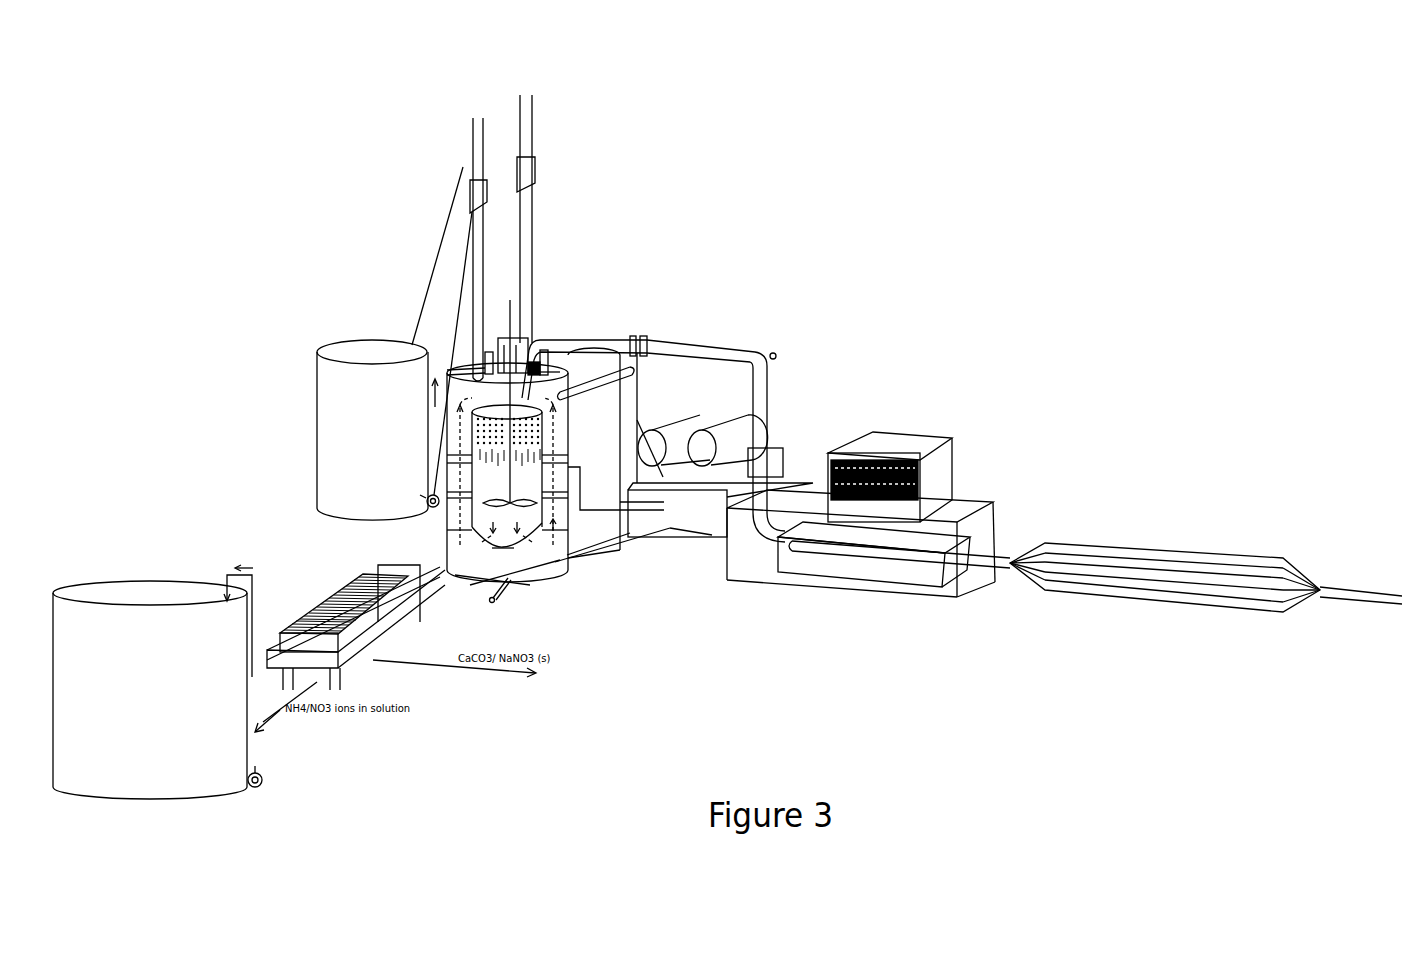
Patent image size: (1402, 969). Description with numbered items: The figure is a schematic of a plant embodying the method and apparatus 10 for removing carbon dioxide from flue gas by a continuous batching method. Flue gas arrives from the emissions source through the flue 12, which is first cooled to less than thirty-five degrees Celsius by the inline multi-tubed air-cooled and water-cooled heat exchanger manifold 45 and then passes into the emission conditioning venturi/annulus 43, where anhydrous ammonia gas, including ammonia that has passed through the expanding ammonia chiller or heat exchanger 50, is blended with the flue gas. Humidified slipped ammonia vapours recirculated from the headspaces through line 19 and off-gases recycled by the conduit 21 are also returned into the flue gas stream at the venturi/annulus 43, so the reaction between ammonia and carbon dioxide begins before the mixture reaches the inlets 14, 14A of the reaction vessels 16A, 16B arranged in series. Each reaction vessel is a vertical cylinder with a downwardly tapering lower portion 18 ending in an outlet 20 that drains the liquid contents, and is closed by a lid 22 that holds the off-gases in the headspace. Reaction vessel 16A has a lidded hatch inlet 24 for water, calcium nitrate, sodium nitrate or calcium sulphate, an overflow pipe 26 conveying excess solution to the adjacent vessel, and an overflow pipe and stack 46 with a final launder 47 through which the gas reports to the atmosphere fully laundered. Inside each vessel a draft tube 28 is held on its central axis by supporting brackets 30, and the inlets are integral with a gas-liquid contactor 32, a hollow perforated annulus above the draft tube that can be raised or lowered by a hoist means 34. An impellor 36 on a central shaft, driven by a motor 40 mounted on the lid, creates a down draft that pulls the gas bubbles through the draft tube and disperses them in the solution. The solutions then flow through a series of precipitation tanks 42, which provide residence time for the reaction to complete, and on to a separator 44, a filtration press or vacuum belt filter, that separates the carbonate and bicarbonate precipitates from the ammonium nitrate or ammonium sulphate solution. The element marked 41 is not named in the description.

The apparatus 10 is at (625, 462).
The flue 12 is at (1361, 585).
The inlet 14 is at (584, 355).
The inlet 14A is at (565, 366).
The reaction vessel 16A is at (530, 584).
The reaction vessel 16B is at (543, 480).
The downwardly tapering lower portion 18 is at (529, 581).
The line 19 is at (616, 453).
The outlet 20 is at (481, 601).
The conduit 21 is at (498, 401).
The lid 22 is at (379, 430).
The lidded hatch inlet 24 is at (466, 361).
The overflow pipe 26 is at (596, 387).
The draft tube 28 is at (502, 556).
The supporting bracket 30 is at (507, 537).
The gas-liquid contactor 32 is at (534, 473).
The hoist means 34 is at (548, 361).
The impellor 36 is at (526, 508).
The motor 40 is at (518, 345).
The gas pipe 41 is at (720, 436).
The precipitation tank 42 is at (628, 566).
The venturi/annulus 43 is at (656, 338).
The separator 44 is at (356, 627).
The multiple tubed air cooled manifold 45 is at (1023, 522).
The overflow pipe and stack 46 is at (654, 295).
The launder 47 is at (524, 184).
The heat exchanger 50 is at (720, 476).